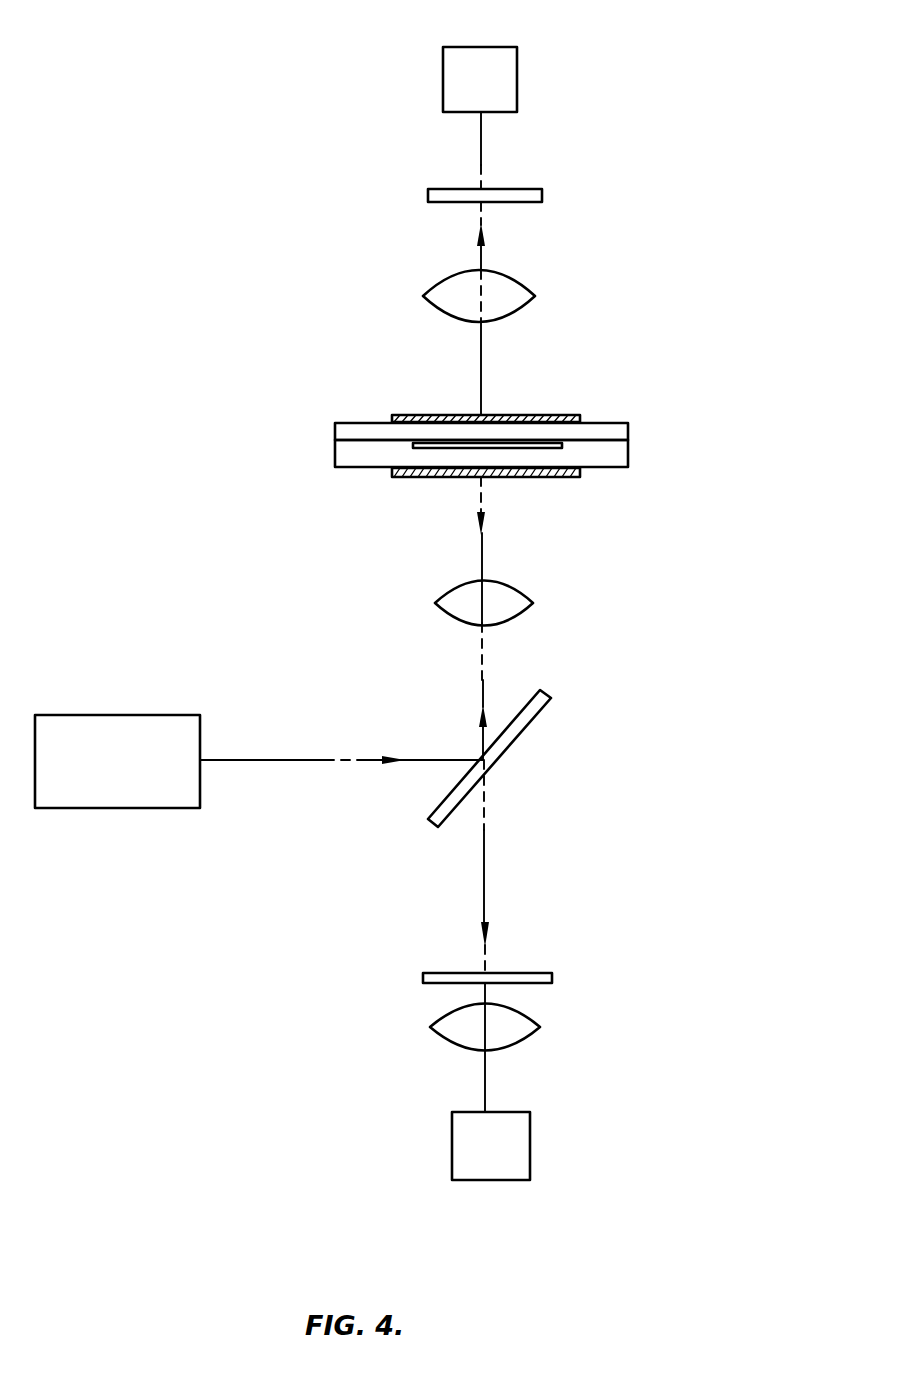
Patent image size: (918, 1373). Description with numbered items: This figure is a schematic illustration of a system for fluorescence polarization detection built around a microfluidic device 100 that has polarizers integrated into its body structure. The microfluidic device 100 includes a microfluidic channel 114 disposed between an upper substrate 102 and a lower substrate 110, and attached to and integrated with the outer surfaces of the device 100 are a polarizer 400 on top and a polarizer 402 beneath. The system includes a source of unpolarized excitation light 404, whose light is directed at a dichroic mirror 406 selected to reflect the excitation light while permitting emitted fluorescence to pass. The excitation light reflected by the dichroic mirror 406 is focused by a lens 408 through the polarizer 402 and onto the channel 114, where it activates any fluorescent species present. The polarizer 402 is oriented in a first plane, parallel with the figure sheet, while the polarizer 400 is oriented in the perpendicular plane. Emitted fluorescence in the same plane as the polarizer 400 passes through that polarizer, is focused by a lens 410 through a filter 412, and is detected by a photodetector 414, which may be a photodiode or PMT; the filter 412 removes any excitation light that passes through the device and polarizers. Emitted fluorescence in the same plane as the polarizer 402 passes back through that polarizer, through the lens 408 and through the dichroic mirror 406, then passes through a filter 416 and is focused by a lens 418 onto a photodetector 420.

The microfluidic device 100 is at (675, 441).
The upper substrate 102 is at (335, 428).
The lower substrate 110 is at (335, 457).
The microfluidic channel 114 is at (413, 445).
The polarizer 400 is at (570, 415).
The polarizer 402 is at (570, 477).
The source of unpolarized excitation light 404 is at (175, 715).
The dichroic mirror 406 is at (540, 710).
The lens 408 is at (525, 592).
The lens 410 is at (526, 284).
The filter 412 is at (528, 189).
The photodetector 414 is at (505, 47).
The filter 416 is at (535, 973).
The lens 418 is at (535, 1020).
The photodetector 420 is at (515, 1112).